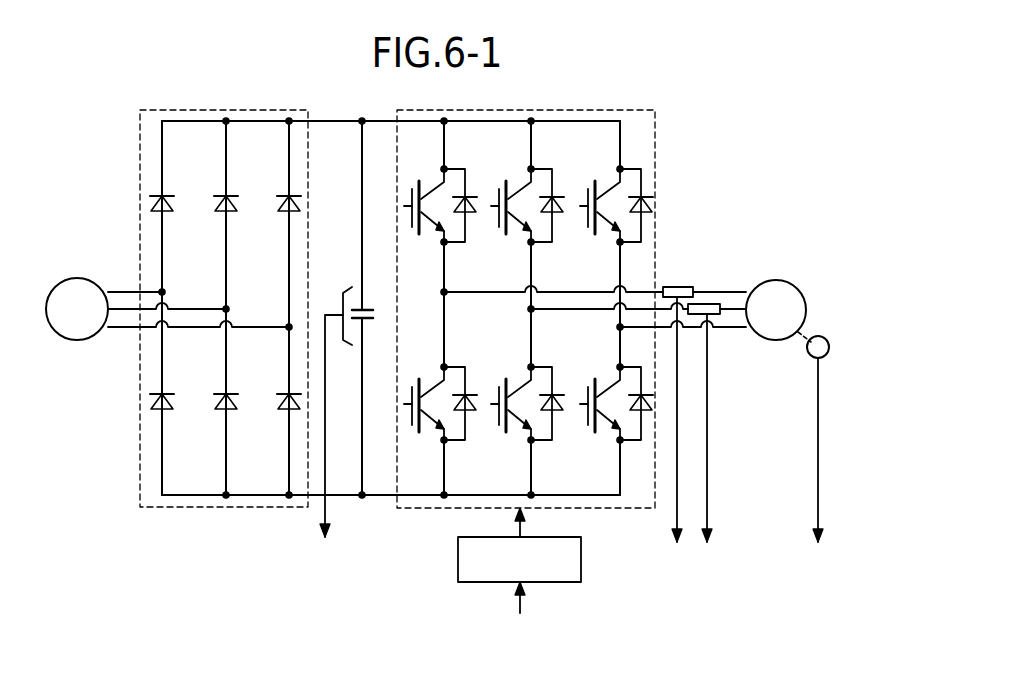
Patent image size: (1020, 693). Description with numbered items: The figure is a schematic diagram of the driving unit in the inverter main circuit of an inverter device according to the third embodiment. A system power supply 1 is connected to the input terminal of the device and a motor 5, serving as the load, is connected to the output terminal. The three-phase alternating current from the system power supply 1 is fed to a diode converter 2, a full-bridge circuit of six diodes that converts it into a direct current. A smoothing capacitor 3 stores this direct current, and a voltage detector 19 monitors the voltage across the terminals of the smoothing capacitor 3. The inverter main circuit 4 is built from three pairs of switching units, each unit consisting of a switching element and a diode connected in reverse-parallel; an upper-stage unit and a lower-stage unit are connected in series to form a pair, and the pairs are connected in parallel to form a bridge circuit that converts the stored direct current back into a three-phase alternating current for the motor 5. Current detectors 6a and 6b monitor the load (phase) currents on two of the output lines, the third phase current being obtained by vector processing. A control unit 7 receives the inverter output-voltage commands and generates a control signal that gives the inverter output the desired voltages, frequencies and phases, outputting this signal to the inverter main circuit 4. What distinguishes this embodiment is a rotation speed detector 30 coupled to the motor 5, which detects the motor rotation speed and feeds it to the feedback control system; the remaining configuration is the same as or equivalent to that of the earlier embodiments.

The system power supply 1 is at (77, 340).
The diode converter 2 is at (272, 110).
The smoothing capacitor 3 is at (366, 308).
The inverter main circuit 4 is at (625, 110).
The motor 5 is at (777, 340).
The current detector 6a is at (678, 286).
The current detector 6b is at (710, 304).
The control unit 7 is at (546, 537).
The voltage detector 19 is at (348, 346).
The rotation speed detector 30 is at (818, 336).